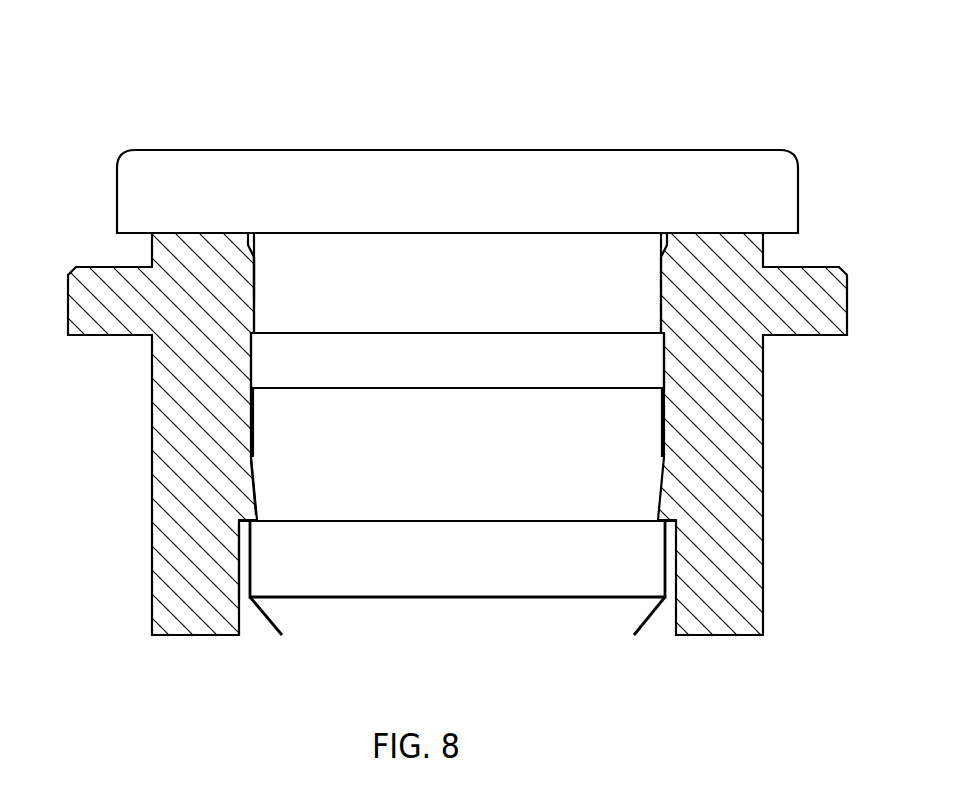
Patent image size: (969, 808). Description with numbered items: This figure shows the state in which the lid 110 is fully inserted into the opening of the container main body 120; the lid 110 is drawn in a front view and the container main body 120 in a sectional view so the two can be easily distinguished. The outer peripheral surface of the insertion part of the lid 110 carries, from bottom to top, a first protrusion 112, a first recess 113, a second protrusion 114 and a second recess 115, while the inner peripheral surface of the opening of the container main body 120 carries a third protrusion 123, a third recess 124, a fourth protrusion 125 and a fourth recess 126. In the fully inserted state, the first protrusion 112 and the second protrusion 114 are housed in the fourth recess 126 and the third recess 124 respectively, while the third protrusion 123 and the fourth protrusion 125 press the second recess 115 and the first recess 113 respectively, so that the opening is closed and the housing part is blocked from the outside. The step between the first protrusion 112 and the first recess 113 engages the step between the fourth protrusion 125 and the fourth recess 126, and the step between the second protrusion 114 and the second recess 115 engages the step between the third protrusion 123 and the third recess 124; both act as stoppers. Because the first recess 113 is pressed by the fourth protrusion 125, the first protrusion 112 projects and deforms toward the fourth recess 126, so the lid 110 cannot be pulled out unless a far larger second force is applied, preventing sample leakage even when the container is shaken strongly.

The lid 110 is at (693, 102).
The first protrusion 112 is at (253, 558).
The first recess 113 is at (255, 446).
The second protrusion 114 is at (254, 364).
The second recess 115 is at (255, 293).
The container main body 120 is at (826, 246).
The third protrusion 123 is at (253, 278).
The third recess 124 is at (251, 415).
The fourth protrusion 125 is at (255, 484).
The fourth recess 126 is at (246, 565).